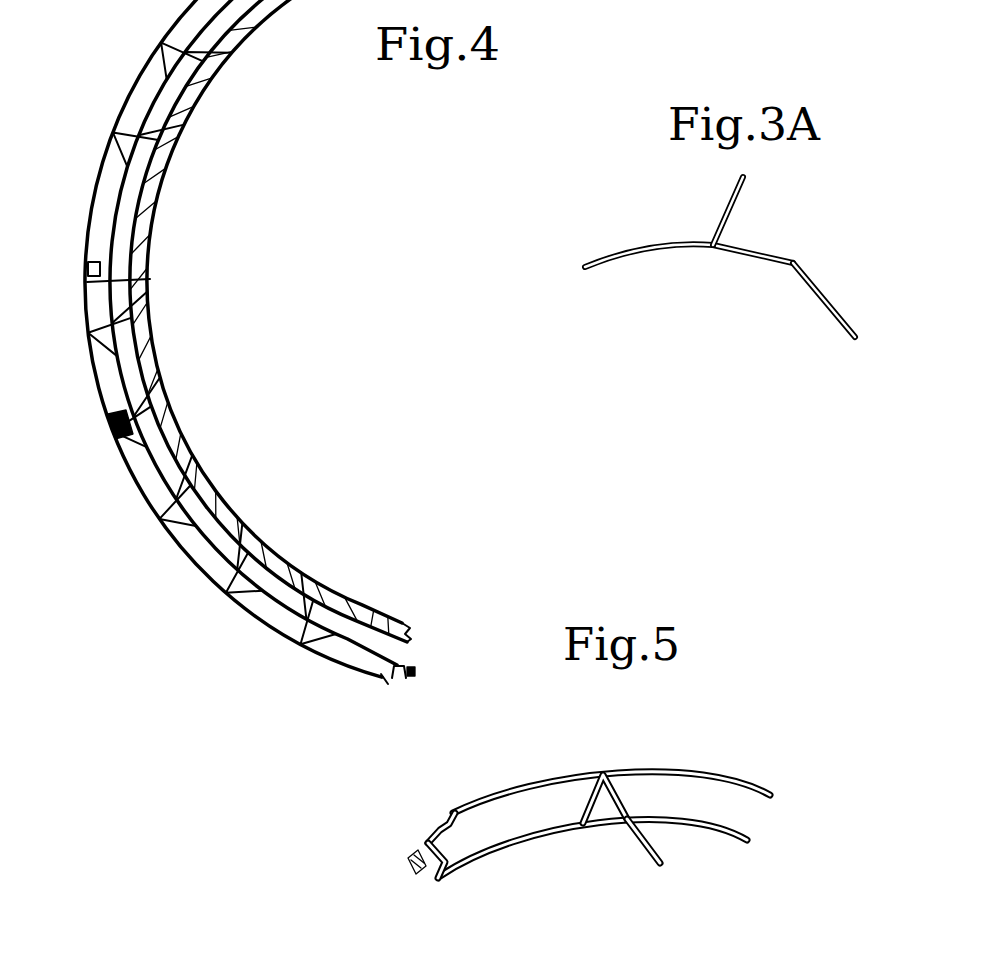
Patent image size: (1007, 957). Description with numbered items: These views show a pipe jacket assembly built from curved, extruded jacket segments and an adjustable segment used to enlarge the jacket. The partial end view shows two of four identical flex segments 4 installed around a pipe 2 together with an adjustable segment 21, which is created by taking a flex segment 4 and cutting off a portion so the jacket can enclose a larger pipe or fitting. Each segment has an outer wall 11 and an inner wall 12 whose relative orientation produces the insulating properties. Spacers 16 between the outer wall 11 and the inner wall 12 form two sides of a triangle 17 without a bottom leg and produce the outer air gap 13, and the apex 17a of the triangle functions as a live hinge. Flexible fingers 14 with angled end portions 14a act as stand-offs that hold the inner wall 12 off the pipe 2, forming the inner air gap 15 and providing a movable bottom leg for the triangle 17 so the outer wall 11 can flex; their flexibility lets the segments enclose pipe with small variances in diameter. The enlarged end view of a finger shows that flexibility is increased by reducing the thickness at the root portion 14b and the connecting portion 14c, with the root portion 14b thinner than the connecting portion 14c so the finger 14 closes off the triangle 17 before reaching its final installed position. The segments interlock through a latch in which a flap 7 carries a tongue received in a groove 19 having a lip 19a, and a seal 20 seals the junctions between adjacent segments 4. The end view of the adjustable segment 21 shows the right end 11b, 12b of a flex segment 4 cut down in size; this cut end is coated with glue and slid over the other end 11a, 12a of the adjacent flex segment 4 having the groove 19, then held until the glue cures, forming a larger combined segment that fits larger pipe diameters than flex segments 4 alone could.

In FIG. 4, the pipe 2 is at (200, 97).
In FIG. 4, the flex segment 4 is at (153, 49).
In FIG. 4, the flap 7 is at (114, 428).
In FIG. 4, the outer wall 11 is at (180, 548).
In FIG. 5, the outer wall 11 is at (500, 790).
In FIG. 4, the end of outer wall 11a is at (388, 675).
In FIG. 5, the end of outer wall 11a is at (440, 828).
In FIG. 4, the cut end of outer wall 11b is at (92, 266).
In FIG. 5, the cut end of outer wall 11b is at (743, 783).
In FIG. 4, the inner wall 12 is at (225, 520).
In FIG. 3A, the inner wall 12 is at (633, 263).
In FIG. 5, the inner wall 12 is at (497, 847).
In FIG. 5, the end of inner wall 12a is at (440, 880).
In FIG. 4, the cut end of inner wall 12b is at (150, 279).
In FIG. 5, the cut end of inner wall 12b is at (733, 840).
In FIG. 4, the outer air gap 13 is at (148, 495).
In FIG. 5, the outer air gap 13 is at (683, 793).
In FIG. 4, the flexible finger 14 is at (343, 613).
In FIG. 3A, the flexible finger 14 is at (750, 260).
In FIG. 5, the flexible finger 14 is at (603, 826).
In FIG. 4, the angled end portion 14a is at (318, 608).
In FIG. 3A, the angled end portion 14a is at (827, 310).
In FIG. 5, the angled end portion 14a is at (643, 853).
In FIG. 3A, the root portion 14b is at (713, 250).
In FIG. 3A, the connecting portion 14c is at (790, 267).
In FIG. 4, the inner air gap 15 is at (170, 462).
In FIG. 5, the inner air gap 15 is at (677, 845).
In FIG. 4, the spacer 16 is at (323, 655).
In FIG. 3A, the spacer 16 is at (733, 207).
In FIG. 5, the spacer 16 is at (583, 803).
In FIG. 5, the triangle 17 is at (623, 772).
In FIG. 5, the apex of the triangle 17a is at (603, 770).
In FIG. 4, the groove 19 is at (410, 665).
In FIG. 5, the groove 19 is at (423, 843).
In FIG. 5, the lip 19a is at (427, 837).
In FIG. 4, the seal 20 is at (417, 675).
In FIG. 5, the seal 20 is at (410, 863).
In FIG. 4, the adjustable segment 21 is at (86, 378).
In FIG. 5, the adjustable segment 21 is at (787, 720).